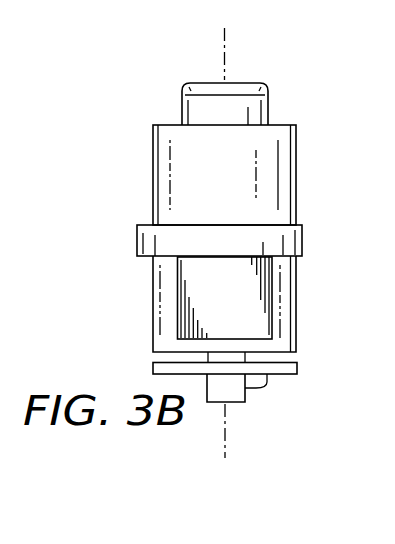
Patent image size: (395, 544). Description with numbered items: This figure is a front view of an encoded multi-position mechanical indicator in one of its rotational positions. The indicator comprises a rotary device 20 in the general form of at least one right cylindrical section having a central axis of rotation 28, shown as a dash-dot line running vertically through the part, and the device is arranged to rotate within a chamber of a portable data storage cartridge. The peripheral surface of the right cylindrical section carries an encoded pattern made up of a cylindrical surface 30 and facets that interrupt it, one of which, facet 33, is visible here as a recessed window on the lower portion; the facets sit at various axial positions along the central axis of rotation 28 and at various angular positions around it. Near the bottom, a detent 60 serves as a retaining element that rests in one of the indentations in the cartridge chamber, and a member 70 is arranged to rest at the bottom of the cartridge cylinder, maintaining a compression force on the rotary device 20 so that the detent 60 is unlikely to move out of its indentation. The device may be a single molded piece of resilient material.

The rotary device 20 is at (119, 199).
The central axis of rotation 28 is at (224, 32).
The cylindrical surface 30 is at (285, 172).
The facet 33 is at (239, 306).
The detent 60 is at (260, 388).
The member 70 is at (297, 370).